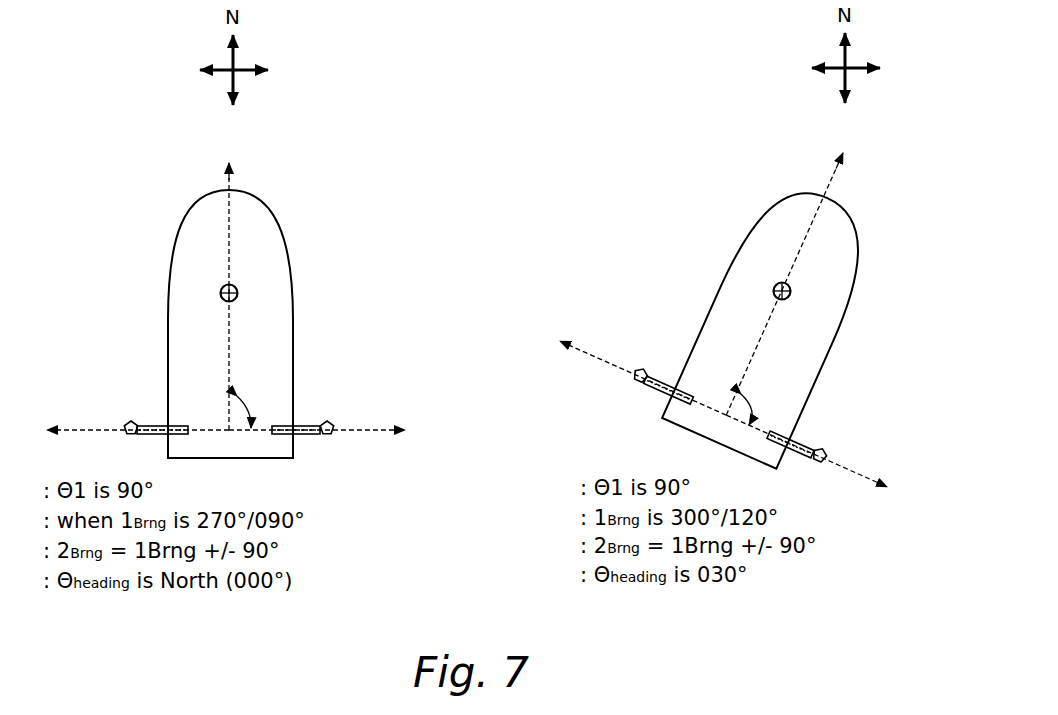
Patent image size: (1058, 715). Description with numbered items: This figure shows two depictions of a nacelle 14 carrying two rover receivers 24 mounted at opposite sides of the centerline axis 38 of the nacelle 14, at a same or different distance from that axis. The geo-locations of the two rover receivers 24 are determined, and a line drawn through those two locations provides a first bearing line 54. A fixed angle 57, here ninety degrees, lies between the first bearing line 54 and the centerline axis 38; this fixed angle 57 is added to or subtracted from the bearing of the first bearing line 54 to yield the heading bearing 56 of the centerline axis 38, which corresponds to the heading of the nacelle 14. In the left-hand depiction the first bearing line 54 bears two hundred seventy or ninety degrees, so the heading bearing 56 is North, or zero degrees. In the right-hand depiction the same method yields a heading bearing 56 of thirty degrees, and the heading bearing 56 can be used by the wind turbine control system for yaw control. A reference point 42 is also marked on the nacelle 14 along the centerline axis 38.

The nacelle 14 is at (290, 268).
The rover receivers 24 is at (125, 426).
The centerline axis 38 is at (226, 182).
The vessel reference point 42 is at (222, 299).
The first bearing line 54 is at (371, 410).
The heading bearing 56 is at (278, 137).
The fixed angle 57 is at (263, 395).